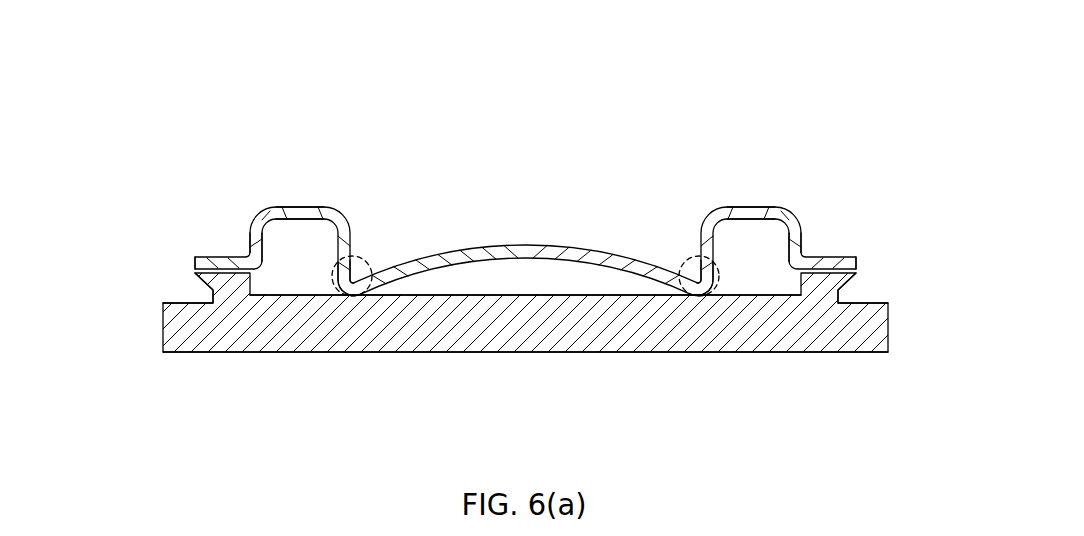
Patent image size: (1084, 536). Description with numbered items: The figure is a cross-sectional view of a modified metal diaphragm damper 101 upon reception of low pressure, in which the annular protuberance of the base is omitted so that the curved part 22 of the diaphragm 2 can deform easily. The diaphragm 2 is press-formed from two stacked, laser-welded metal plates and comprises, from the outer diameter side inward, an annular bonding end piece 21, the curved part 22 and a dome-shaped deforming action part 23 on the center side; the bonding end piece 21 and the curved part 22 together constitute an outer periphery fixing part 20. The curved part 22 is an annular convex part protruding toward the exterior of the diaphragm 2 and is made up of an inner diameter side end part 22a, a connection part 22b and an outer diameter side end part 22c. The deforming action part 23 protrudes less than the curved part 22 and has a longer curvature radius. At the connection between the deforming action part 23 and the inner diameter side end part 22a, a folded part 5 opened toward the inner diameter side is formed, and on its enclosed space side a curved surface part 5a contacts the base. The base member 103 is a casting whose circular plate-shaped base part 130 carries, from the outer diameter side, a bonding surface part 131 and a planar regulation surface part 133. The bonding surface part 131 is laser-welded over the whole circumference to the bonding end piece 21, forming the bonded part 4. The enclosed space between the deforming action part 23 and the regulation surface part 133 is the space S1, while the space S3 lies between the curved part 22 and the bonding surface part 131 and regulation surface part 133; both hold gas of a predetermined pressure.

The diaphragm 2 is at (524, 158).
The bonded part 4 is at (198, 268).
The folded part 5 is at (344, 302).
The curved surface part 5a is at (360, 298).
The outer periphery fixing part 20 is at (524, 182).
The bonding end piece 21 is at (212, 249).
The curved part 22 is at (305, 198).
The inner diameter side end part 22a is at (352, 258).
The connection part 22b is at (322, 208).
The outer diameter side end part 22c is at (247, 235).
The deforming action part 23 is at (536, 241).
The metal diaphragm damper 101 is at (677, 86).
The base member 103 is at (155, 348).
The base part 130 is at (182, 346).
The bonding surface part 131 is at (196, 277).
The regulation surface part 133 is at (531, 293).
The space S1 is at (493, 278).
The space S3 is at (283, 278).